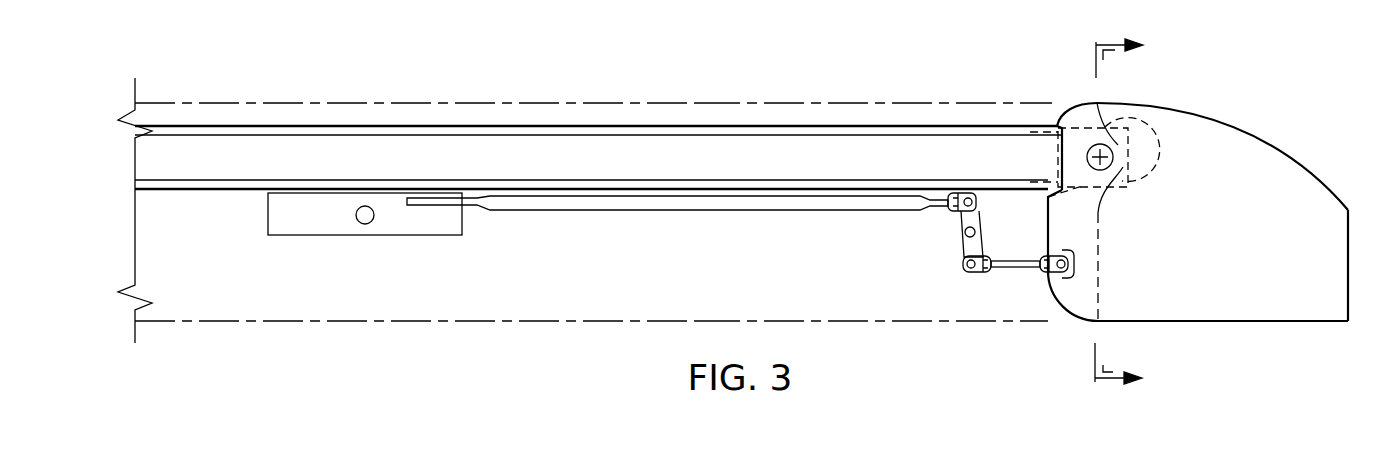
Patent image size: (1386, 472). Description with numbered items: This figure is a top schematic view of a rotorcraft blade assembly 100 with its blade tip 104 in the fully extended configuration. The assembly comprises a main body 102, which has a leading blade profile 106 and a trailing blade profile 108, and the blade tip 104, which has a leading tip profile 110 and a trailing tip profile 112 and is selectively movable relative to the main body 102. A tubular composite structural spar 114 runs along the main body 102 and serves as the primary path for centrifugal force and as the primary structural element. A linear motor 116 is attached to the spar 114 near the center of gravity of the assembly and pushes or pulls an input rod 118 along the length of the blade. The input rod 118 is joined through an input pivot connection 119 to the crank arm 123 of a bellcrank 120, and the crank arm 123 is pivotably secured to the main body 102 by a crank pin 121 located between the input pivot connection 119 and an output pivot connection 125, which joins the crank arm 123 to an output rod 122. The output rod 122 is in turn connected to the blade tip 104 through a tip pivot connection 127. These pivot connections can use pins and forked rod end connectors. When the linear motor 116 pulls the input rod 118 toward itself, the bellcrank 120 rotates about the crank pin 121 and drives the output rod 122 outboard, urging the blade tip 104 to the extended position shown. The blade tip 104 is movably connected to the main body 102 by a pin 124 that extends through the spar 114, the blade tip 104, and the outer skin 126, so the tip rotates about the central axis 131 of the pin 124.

The rotorcraft blade assembly 100 is at (733, 199).
The main body 102 is at (521, 100).
The blade tip 104 is at (1227, 120).
The leading blade profile 106 is at (798, 102).
The trailing blade profile 108 is at (527, 321).
The leading tip profile 110 is at (1285, 158).
The trailing tip profile 112 is at (1233, 322).
The structural spar 114 is at (378, 125).
The linear motor 116 is at (330, 235).
The input rod 118 is at (707, 212).
The input pivot connection 119 is at (962, 186).
The bellcrank 120 is at (953, 220).
The crank pin 121 is at (964, 233).
The output rod 122 is at (1027, 258).
The crank arm 123 is at (967, 247).
The pin 124 is at (1087, 157).
The output pivot connection 125 is at (973, 284).
The outer skin 126 is at (892, 312).
The tip pivot connection 127 is at (1060, 251).
The central axis 131 is at (1113, 157).